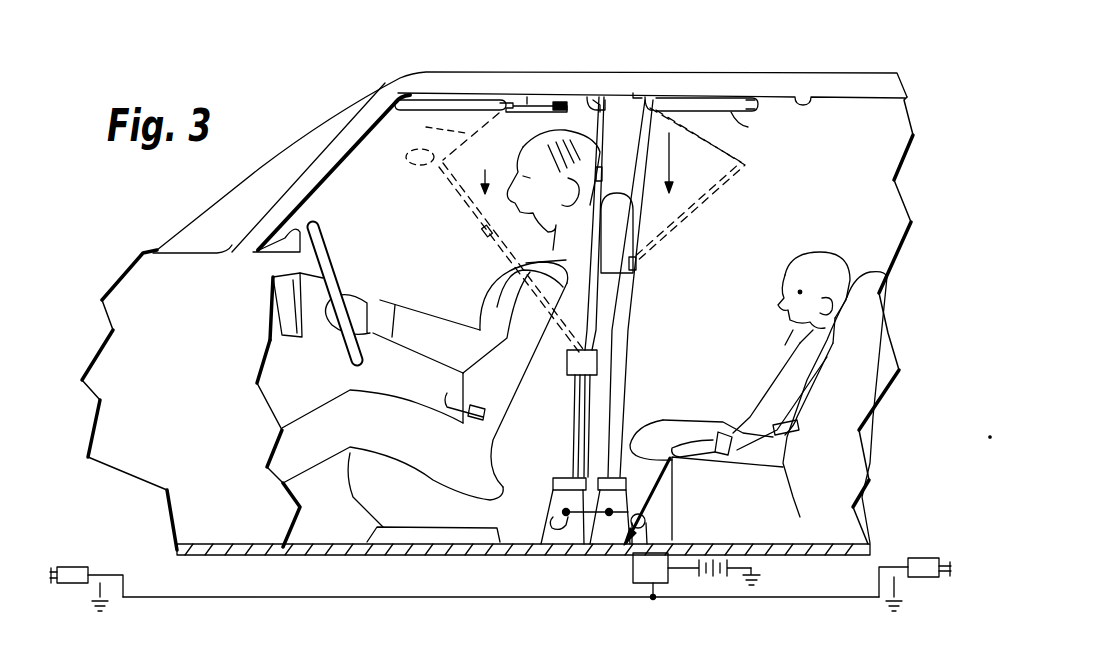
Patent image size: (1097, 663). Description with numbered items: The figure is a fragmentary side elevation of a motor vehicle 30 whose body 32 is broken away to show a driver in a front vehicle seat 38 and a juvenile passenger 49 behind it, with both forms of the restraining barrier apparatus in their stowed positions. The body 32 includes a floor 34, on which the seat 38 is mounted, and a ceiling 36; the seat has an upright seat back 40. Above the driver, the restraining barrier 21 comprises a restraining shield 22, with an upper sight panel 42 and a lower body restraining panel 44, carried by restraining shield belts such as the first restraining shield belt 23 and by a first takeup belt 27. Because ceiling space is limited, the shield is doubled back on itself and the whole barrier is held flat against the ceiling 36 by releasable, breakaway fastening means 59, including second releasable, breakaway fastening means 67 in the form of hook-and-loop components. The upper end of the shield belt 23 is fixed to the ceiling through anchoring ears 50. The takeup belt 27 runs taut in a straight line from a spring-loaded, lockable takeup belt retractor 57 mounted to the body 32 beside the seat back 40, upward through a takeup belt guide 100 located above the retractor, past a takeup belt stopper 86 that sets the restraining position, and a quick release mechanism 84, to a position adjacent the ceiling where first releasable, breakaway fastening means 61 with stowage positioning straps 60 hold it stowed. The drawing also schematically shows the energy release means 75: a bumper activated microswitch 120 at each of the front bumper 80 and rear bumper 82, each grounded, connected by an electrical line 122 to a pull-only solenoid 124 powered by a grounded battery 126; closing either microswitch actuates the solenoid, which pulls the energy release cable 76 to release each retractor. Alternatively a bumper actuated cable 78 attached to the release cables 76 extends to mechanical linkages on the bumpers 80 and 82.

The restraining barrier 21 is at (463, 95).
The restraining shield 22 is at (404, 160).
The first restraining shield belt 23 is at (474, 105).
The first takeup belt 27 is at (499, 253).
The motor vehicle 30 is at (758, 62).
The body 32 is at (152, 262).
The floor 34 is at (520, 547).
The ceiling 36 is at (815, 97).
The vehicle seat 38 is at (437, 513).
The upright seat back 40 is at (603, 387).
The upper sight panel 42 is at (430, 126).
The lower body restraining panel 44 is at (482, 229).
The juvenile passenger 49 is at (807, 362).
The anchoring ears 50 is at (526, 97).
The first takeup belt retractor 57 is at (553, 487).
The releasable, breakaway fastening means 59 is at (677, 84).
The stowage positioning straps 60 is at (633, 93).
The first releasable, breakaway fastening means 61 is at (653, 97).
The second releasable, breakaway fastening means 67 is at (413, 103).
The energy release means 75 is at (636, 537).
The energy release cable 76 is at (553, 517).
The bumper actuated cable 78 is at (293, 595).
The front bumper 80 is at (50, 547).
The rear bumper 82 is at (948, 565).
The quick release mechanism 84 is at (566, 97).
The takeup belt stopper 86 is at (603, 173).
The takeup belt guide 100 is at (597, 357).
The bumper activated microswitch 120 is at (70, 580).
The electrical line 122 is at (788, 594).
The pull-only solenoid 124 is at (634, 578).
The battery 126 is at (749, 545).